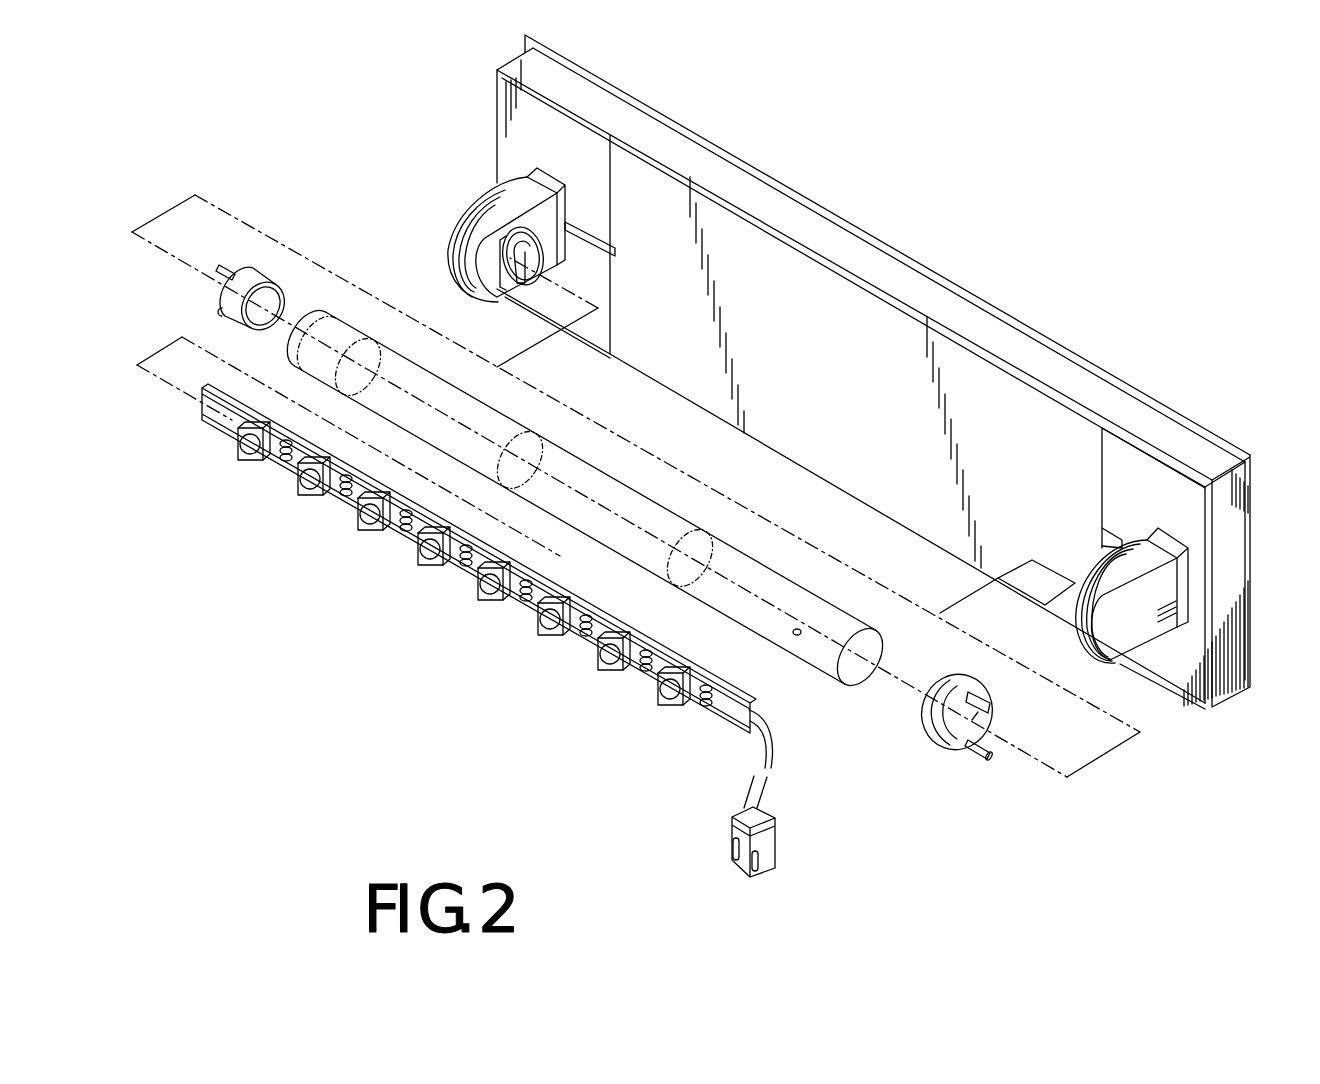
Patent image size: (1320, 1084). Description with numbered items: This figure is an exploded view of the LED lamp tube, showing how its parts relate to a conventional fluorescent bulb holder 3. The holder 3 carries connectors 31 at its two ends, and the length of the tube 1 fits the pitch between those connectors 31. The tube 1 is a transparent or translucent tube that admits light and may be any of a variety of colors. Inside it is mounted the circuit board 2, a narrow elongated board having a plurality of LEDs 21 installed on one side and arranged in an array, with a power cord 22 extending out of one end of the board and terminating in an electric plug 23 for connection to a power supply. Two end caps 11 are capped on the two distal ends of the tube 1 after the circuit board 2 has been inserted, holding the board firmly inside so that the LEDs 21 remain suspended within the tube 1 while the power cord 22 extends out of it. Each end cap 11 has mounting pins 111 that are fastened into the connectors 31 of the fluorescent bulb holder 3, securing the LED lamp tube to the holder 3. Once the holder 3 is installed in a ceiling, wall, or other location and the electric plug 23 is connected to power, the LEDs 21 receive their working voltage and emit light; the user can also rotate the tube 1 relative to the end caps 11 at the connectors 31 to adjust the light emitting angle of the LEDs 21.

The tube 1 is at (918, 729).
The end cap 11 is at (943, 743).
The mounting pin 111 is at (990, 760).
The circuit board 2 is at (488, 630).
The LED 21 is at (652, 692).
The power cord 22 is at (750, 758).
The electric plug 23 is at (732, 817).
The fluorescent bulb holder 3 is at (598, 368).
The connector 31 is at (513, 290).